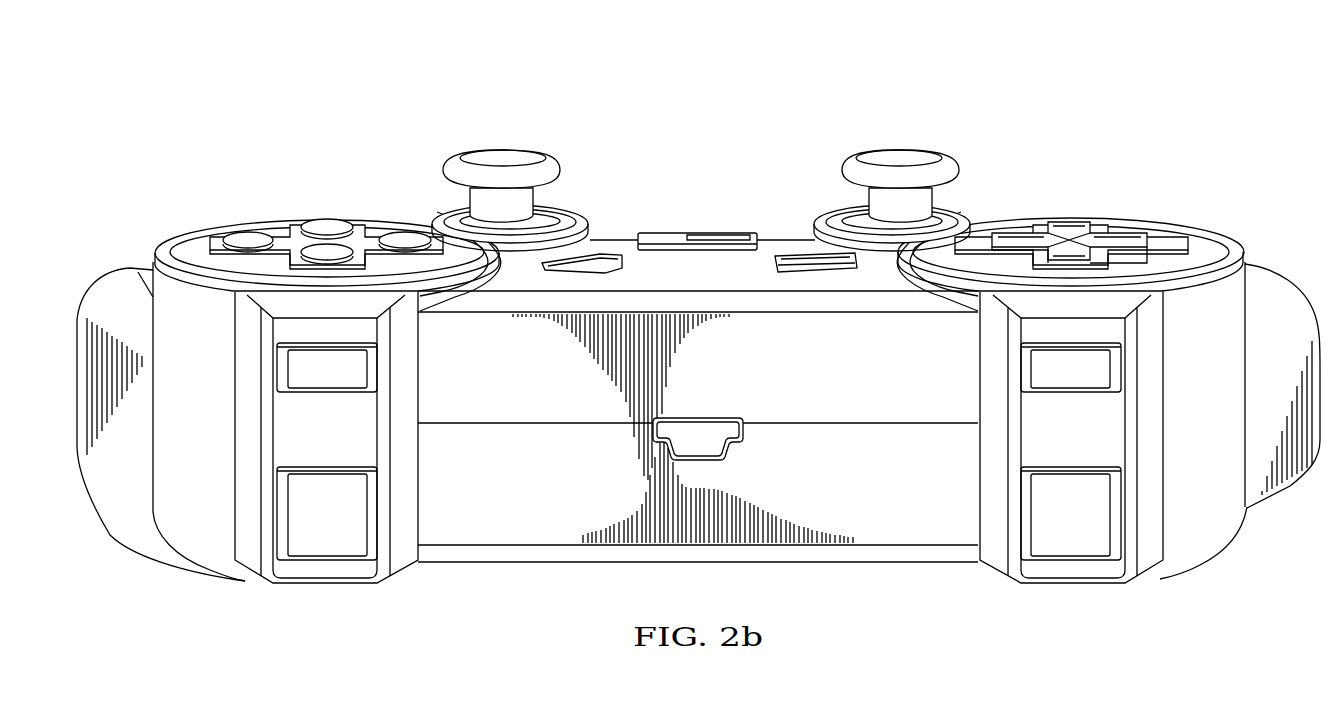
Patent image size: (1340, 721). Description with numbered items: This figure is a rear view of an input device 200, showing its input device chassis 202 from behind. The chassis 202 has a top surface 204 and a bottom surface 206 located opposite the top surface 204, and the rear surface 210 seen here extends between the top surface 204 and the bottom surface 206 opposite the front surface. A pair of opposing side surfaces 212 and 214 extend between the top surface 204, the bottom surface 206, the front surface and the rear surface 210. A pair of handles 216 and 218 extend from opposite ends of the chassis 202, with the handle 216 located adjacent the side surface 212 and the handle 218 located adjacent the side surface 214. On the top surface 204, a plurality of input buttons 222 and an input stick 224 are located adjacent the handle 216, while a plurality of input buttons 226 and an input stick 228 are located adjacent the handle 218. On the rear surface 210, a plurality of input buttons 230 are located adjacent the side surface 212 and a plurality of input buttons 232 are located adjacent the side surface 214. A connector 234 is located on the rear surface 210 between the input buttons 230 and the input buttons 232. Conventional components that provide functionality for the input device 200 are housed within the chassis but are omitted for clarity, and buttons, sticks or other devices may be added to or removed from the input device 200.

The input device 200 is at (276, 91).
The input device chassis 202 is at (1228, 234).
The top surface 204 is at (620, 246).
The bottom surface 206 is at (856, 563).
The rear surface 210 is at (550, 532).
The side surface 212 is at (1260, 513).
The side surface 214 is at (147, 508).
The handle 216 is at (1298, 276).
The handle 218 is at (103, 282).
The input buttons 222 is at (1126, 232).
The input stick 224 is at (940, 162).
The input buttons 226 is at (403, 230).
The input stick 228 is at (452, 162).
The input buttons 230 is at (1040, 467).
The input buttons 232 is at (360, 467).
The connector 234 is at (723, 418).